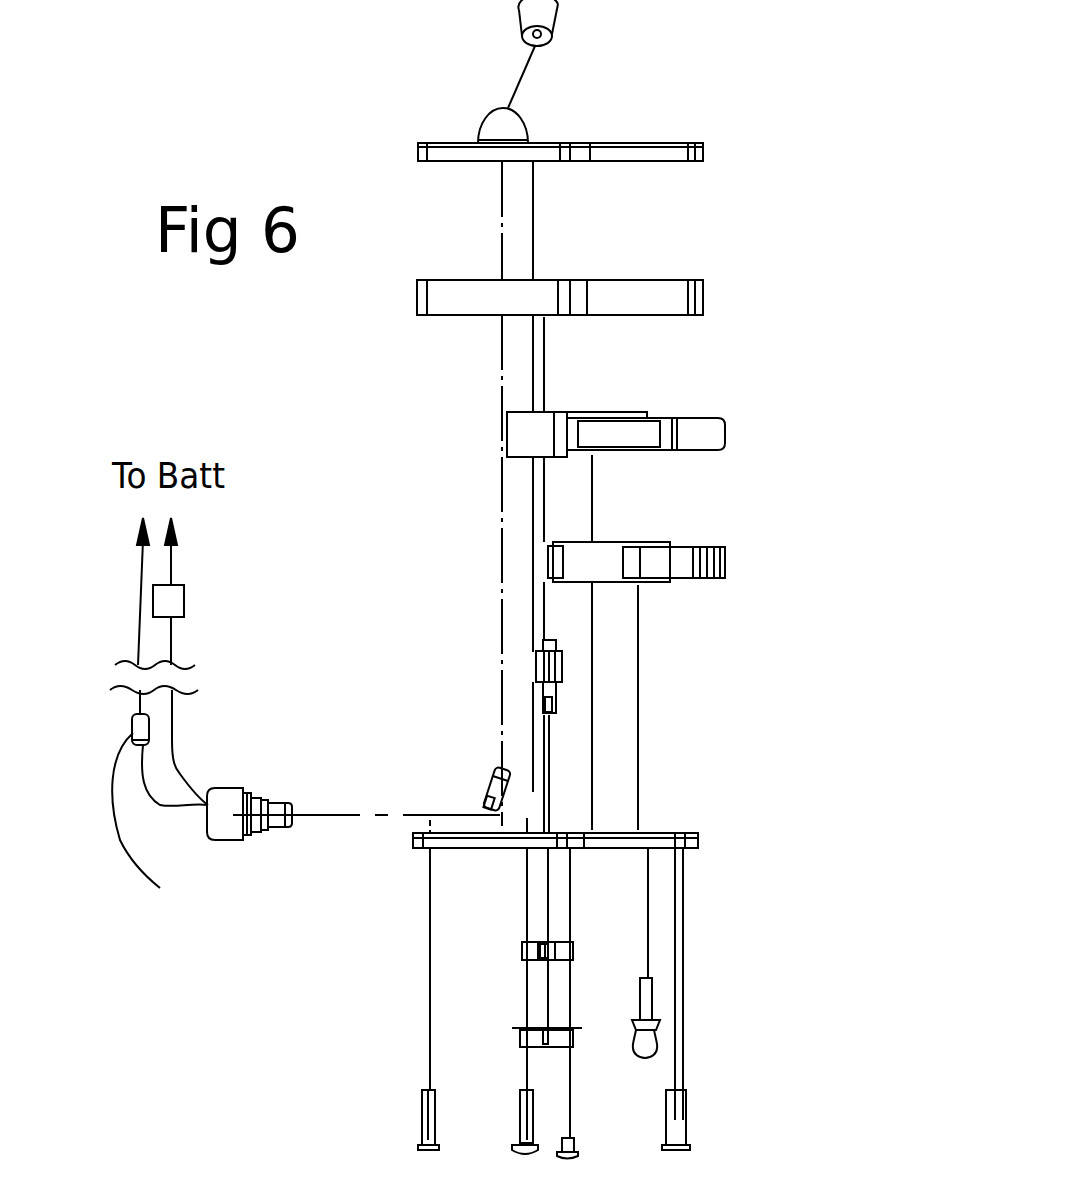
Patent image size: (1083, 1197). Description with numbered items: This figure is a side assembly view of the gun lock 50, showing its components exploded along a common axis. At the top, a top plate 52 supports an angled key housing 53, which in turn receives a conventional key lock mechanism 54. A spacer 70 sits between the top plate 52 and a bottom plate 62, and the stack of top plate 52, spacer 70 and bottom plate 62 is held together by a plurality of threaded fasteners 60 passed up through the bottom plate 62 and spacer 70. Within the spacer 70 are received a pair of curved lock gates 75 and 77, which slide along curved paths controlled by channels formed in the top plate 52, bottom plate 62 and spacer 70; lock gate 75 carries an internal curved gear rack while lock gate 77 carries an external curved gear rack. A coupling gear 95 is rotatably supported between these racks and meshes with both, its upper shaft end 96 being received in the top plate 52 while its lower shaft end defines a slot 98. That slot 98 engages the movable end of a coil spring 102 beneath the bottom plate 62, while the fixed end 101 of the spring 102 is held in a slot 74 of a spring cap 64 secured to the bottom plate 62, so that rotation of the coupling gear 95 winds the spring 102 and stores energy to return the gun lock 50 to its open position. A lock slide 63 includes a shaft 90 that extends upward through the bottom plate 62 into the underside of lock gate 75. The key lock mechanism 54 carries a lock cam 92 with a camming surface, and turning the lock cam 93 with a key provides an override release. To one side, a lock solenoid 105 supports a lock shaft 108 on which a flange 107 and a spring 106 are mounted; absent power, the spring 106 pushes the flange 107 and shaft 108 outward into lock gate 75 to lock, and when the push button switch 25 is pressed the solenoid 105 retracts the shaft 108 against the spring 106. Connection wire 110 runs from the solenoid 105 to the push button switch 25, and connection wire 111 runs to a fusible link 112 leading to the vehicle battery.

The push button switch 25 is at (186, 603).
The gun lock 50 is at (332, 369).
The top plate 52 is at (708, 152).
The angled key housing 53 is at (478, 135).
The key lock mechanism 54 is at (552, 30).
The threaded fasteners 60 is at (420, 1113).
The bottom plate 62 is at (700, 843).
The lock slide 63 is at (684, 1053).
The spring cap 64 is at (520, 1048).
The spacer 70 is at (706, 298).
The slot 74 is at (545, 1050).
The lock gate 75 is at (705, 452).
The lock gate 77 is at (690, 580).
The shaft 90 is at (652, 1003).
The lock cam 92 is at (489, 782).
The lock cam 93 is at (491, 798).
The coupling gear 95 is at (562, 665).
The upper shaft end 96 is at (541, 650).
The slot 98 is at (556, 707).
The fixed end 101 is at (545, 962).
The coil spring 102 is at (573, 950).
The lock solenoid 105 is at (236, 785).
The spring 106 is at (250, 840).
The flange 107 is at (262, 840).
The lock shaft 108 is at (275, 798).
The connection wire 110 is at (172, 762).
The connection wire 111 is at (160, 806).
The fusible link 112 is at (159, 811).